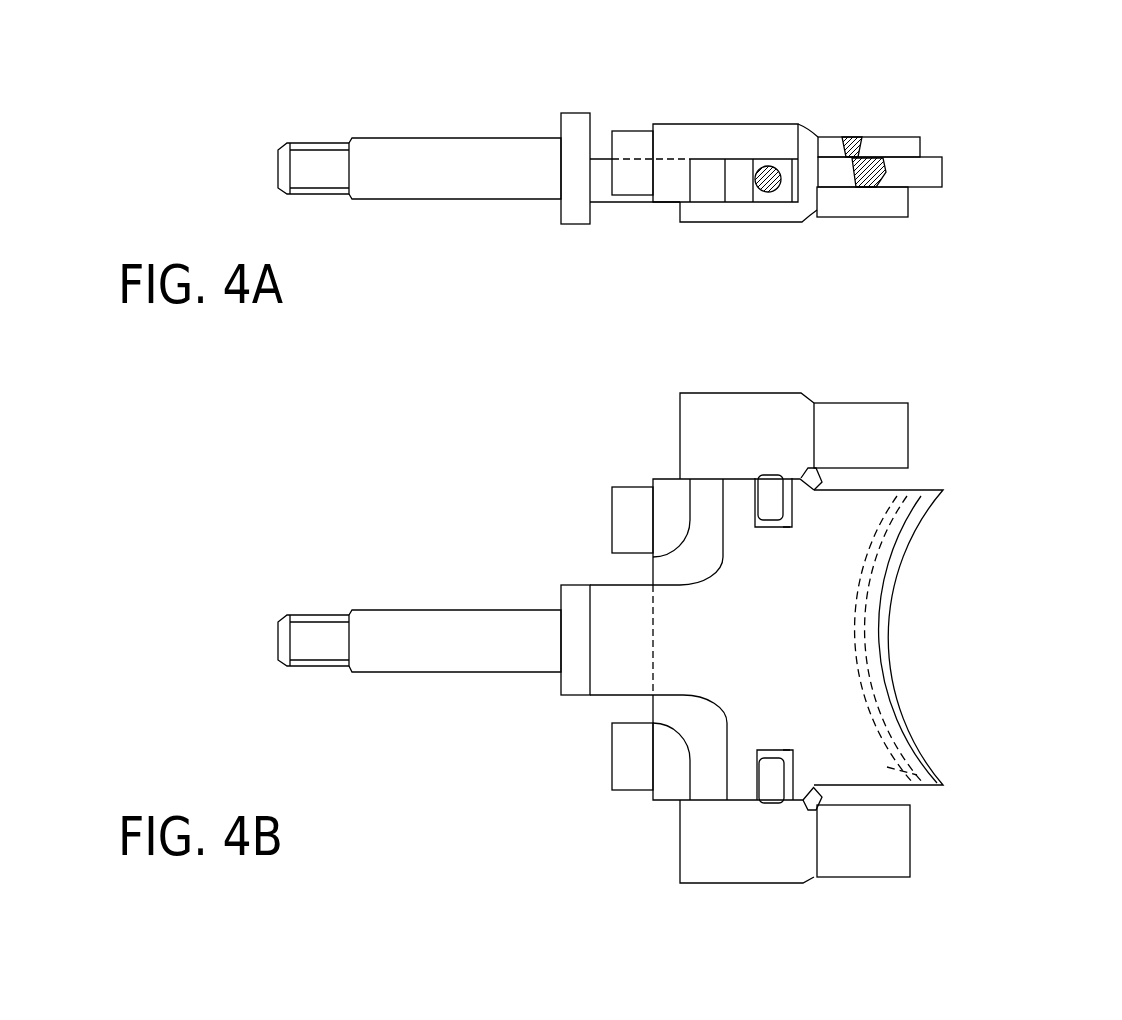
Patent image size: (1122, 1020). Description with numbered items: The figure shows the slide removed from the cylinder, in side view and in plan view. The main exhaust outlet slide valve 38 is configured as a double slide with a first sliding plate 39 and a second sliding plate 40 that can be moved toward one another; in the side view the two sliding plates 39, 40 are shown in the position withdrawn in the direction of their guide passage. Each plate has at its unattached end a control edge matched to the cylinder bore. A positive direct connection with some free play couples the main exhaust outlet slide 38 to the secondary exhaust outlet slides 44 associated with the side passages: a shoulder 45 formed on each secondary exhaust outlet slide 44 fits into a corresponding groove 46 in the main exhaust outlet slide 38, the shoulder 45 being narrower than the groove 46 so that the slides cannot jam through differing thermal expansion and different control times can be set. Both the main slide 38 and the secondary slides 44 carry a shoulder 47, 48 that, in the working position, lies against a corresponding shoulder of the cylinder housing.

In FIG. 4A, the main exhaust outlet slide valve 38 is at (605, 103).
In FIG. 4B, the main exhaust outlet slide valve 38 is at (533, 531).
In FIG. 4A, the first sliding plate 39 is at (922, 172).
In FIG. 4B, the first sliding plate 39 is at (943, 785).
In FIG. 4A, the second sliding plate 40 is at (901, 147).
In FIG. 4B, the second sliding plate 40 is at (870, 513).
In FIG. 4A, the secondary exhaust outlet slide 44 is at (741, 212).
In FIG. 4B, the secondary exhaust outlet slide 44 is at (713, 435).
In FIG. 4B, the shoulder 45 is at (767, 507).
In FIG. 4B, the groove 46 is at (787, 527).
In FIG. 4B, the shoulder 47 is at (813, 403).
In FIG. 4B, the shoulder 48 is at (813, 488).